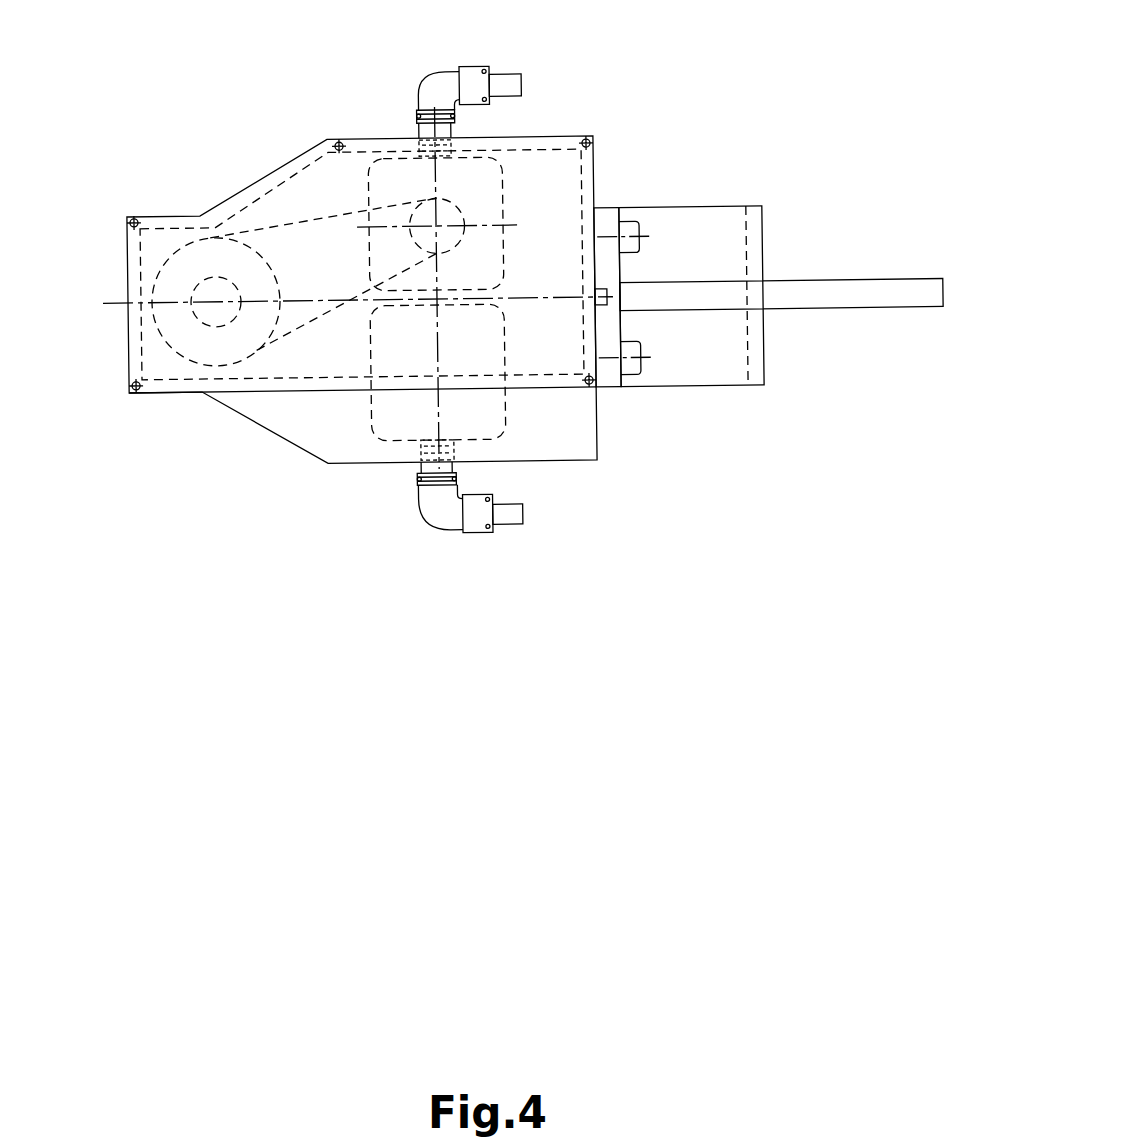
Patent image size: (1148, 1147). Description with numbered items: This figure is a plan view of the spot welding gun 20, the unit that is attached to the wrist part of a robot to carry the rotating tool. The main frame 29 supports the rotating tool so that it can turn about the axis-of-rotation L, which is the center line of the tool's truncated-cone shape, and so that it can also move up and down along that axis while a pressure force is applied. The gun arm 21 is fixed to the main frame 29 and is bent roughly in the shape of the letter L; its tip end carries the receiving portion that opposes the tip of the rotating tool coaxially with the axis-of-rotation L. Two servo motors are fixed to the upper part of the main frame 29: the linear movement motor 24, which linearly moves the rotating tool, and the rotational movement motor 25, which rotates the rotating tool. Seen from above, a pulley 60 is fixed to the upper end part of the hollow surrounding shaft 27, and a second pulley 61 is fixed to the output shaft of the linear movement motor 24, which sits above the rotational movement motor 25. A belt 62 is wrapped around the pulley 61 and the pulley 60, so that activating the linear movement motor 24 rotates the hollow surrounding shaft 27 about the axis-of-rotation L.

The spot welding gun 20 is at (671, 101).
The gun arm 21 is at (823, 301).
The linear movement motor 24 is at (504, 192).
The rotational movement motor 25 is at (502, 410).
The hollow surrounding shaft 27 is at (210, 324).
The main frame 29 is at (535, 149).
The pulley 60 is at (198, 240).
The pulley 61 is at (413, 211).
The belt 62 is at (296, 221).
The axis-of-rotation L is at (217, 300).